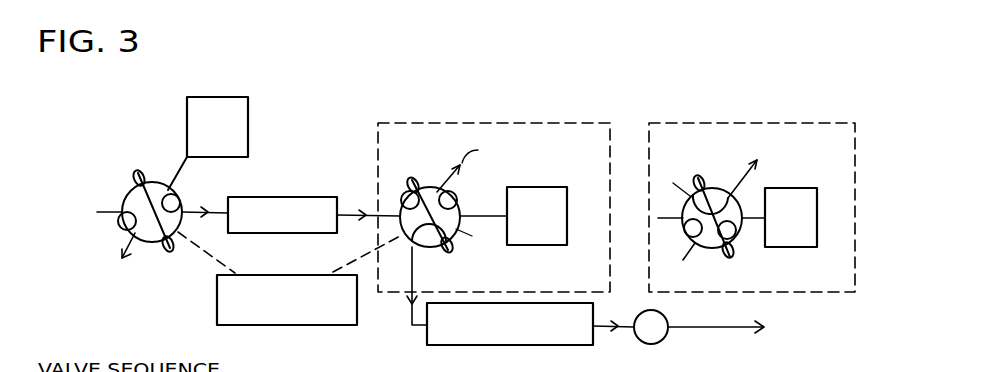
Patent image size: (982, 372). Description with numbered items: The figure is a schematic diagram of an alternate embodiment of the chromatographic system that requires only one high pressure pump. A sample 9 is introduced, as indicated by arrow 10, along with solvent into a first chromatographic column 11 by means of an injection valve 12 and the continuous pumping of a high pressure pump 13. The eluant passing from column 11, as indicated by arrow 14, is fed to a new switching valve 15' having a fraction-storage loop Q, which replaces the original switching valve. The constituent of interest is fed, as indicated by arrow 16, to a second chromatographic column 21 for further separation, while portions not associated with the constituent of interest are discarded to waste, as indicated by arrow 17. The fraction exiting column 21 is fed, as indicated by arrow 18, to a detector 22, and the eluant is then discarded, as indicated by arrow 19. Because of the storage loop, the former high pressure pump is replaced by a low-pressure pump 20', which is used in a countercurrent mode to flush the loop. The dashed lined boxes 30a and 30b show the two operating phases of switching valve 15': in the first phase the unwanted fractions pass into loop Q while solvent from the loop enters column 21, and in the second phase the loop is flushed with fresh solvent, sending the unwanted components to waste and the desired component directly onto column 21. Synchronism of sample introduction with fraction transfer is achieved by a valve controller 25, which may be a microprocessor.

The sample 9 is at (74, 223).
The arrow indicating sample introduction 10 is at (192, 211).
The first chromatographic column 11 is at (305, 197).
The injection valve 12 is at (118, 188).
The high pressure pump 13 is at (187, 108).
The arrow indicating eluant flow 14 is at (352, 213).
The switching valve 15' is at (593, 169).
The arrow indicating fraction flow to second column 16 is at (408, 281).
The arrow indicating discard to waste 17 is at (452, 190).
The arrow indicating flow to detector 18 is at (602, 323).
The arrow indicating eluant discard 19 is at (717, 327).
The low-pressure pump 20' is at (678, 205).
The second chromatographic column 21 is at (563, 345).
The detector 22 is at (650, 344).
The valve controller 25 is at (317, 325).
The dashed lined box 30a is at (513, 123).
The dashed lined box 30b is at (763, 123).